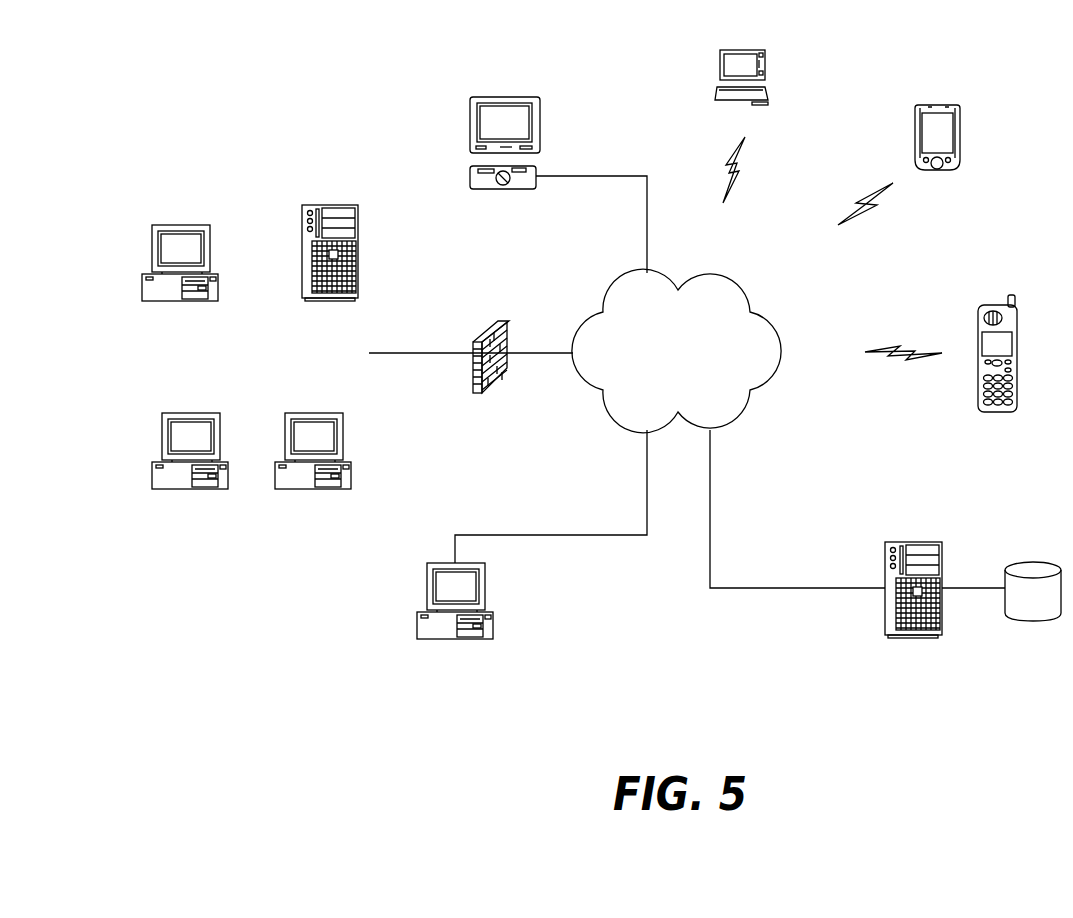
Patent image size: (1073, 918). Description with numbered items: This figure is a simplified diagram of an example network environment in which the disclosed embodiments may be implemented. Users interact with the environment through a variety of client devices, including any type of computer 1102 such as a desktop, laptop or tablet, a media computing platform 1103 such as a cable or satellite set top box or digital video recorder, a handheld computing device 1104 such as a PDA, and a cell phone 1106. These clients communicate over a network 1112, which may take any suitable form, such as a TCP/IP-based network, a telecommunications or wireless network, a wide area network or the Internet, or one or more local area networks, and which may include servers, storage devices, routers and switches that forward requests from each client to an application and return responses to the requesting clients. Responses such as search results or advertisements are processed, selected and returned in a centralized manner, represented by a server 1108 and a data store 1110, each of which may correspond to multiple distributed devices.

The computer 1102 is at (152, 252).
The media computing platform 1103 is at (468, 176).
The handheld computing device 1104 is at (920, 105).
The cell phone 1106 is at (980, 315).
The server 1108 is at (893, 543).
The data store 1110 is at (1033, 560).
The network 1112 is at (620, 290).